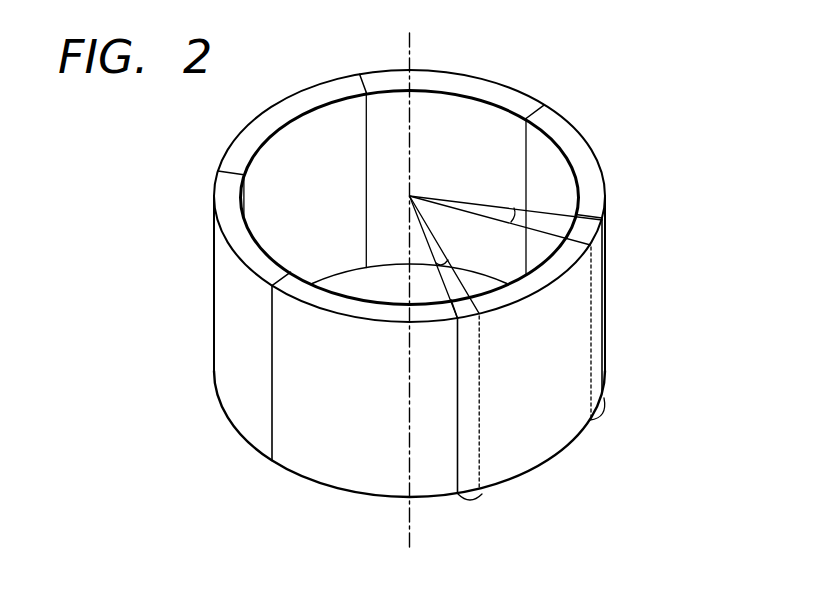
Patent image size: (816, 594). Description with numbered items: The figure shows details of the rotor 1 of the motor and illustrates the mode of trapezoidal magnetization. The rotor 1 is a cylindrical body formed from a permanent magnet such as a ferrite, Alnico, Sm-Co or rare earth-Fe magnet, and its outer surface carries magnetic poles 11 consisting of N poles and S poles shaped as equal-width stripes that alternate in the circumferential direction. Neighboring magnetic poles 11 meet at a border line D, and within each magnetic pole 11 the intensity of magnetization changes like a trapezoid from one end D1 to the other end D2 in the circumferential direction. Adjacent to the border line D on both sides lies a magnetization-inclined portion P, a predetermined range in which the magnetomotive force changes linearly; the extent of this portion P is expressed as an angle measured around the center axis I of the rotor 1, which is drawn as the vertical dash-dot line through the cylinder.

The rotor 1 is at (582, 104).
The magnetic pole 11 is at (300, 84).
The center axis I is at (405, 44).
The magnetization-inclined portion P is at (594, 420).
The border line D is at (270, 442).
The one end of magnetic pole D1 is at (455, 475).
The other end of magnetic pole D2 is at (602, 317).